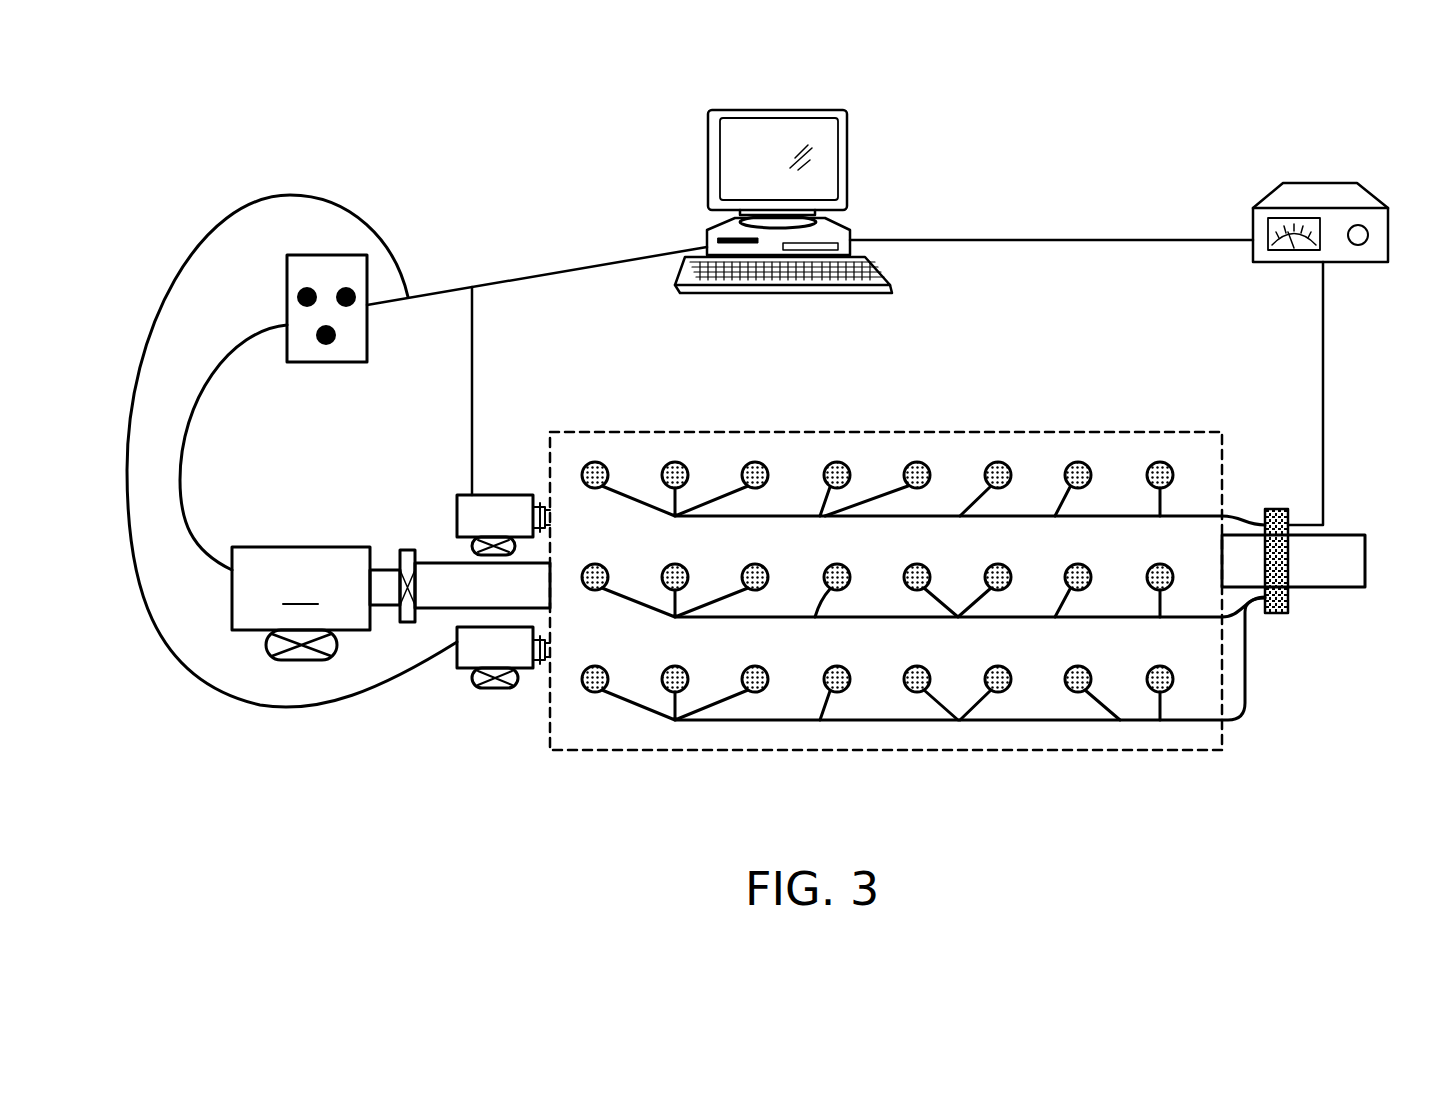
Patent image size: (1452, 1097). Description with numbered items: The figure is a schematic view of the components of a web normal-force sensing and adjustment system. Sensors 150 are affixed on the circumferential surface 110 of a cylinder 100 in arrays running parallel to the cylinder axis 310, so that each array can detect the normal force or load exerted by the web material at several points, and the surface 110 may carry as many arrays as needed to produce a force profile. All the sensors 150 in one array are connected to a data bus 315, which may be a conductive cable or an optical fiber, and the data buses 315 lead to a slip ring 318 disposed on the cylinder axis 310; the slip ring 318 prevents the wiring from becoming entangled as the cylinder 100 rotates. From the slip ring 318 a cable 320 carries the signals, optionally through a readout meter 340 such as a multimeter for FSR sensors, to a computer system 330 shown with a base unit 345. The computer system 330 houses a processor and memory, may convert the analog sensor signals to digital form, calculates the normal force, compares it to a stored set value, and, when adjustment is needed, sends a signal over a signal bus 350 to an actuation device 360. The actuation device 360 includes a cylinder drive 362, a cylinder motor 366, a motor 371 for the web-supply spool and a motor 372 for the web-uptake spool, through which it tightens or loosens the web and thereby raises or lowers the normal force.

The cylinder 100 is at (1237, 782).
The circumferential surface 110 is at (775, 703).
The sensors 150 is at (675, 462).
The cylinder axis 310 is at (1365, 572).
The data bus 315 is at (978, 597).
The slip ring 318 is at (1283, 616).
The cable 320 is at (1062, 238).
The computer system 330 is at (756, 201).
The readout meter 340 is at (1335, 165).
The computer base unit 345 is at (850, 230).
The signal bus 350 is at (512, 273).
The actuation device 360 is at (220, 175).
The cylinder drive 362 is at (285, 284).
The cylinder motor 366 is at (391, 603).
The motor for a web-supply spool 371 is at (440, 497).
The motor for a web-uptake spool 372 is at (487, 707).